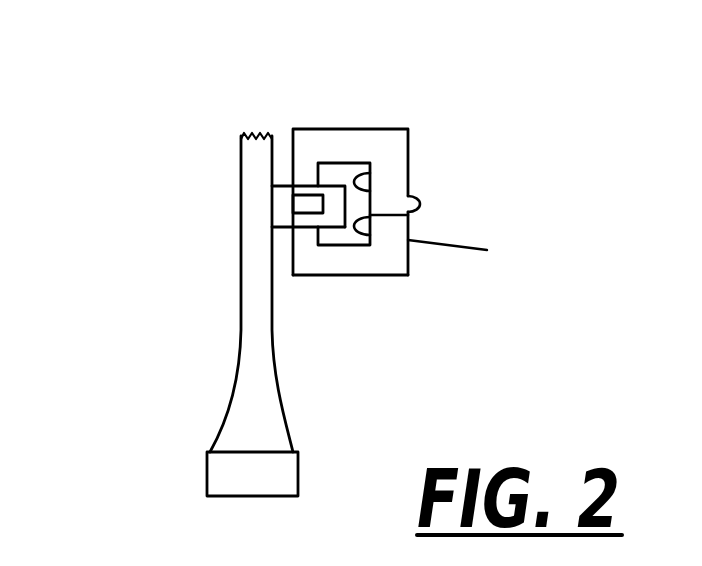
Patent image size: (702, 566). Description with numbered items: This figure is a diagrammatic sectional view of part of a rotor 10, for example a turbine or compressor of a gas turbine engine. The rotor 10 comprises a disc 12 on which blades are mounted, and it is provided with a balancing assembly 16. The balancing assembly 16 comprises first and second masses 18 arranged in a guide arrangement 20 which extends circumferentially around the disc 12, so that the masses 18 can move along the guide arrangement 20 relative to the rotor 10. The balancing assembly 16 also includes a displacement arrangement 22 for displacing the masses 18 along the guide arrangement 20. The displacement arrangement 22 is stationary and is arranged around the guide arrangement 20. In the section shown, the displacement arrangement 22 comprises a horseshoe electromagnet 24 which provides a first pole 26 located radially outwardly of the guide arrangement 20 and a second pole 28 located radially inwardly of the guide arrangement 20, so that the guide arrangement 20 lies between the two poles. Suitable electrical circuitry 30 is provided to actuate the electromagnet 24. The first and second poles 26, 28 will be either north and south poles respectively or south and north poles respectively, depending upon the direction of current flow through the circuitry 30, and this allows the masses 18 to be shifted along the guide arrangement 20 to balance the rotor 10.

The rotor 10 is at (180, 324).
The disc 12 is at (221, 477).
The balancing assembly 16 is at (303, 122).
The masses 18 is at (298, 210).
The guide arrangement 20 is at (273, 205).
The displacement arrangement 22 is at (438, 291).
The horseshoe electromagnet 24 is at (358, 277).
The first pole 26 is at (308, 172).
The second pole 28 is at (307, 238).
The electrical circuitry 30 is at (366, 177).